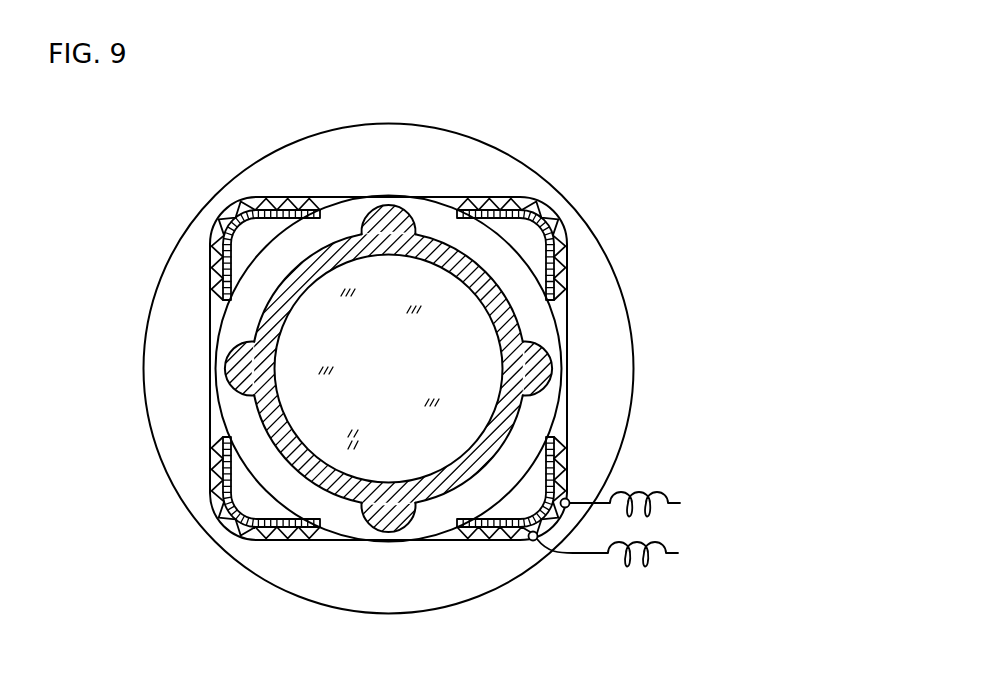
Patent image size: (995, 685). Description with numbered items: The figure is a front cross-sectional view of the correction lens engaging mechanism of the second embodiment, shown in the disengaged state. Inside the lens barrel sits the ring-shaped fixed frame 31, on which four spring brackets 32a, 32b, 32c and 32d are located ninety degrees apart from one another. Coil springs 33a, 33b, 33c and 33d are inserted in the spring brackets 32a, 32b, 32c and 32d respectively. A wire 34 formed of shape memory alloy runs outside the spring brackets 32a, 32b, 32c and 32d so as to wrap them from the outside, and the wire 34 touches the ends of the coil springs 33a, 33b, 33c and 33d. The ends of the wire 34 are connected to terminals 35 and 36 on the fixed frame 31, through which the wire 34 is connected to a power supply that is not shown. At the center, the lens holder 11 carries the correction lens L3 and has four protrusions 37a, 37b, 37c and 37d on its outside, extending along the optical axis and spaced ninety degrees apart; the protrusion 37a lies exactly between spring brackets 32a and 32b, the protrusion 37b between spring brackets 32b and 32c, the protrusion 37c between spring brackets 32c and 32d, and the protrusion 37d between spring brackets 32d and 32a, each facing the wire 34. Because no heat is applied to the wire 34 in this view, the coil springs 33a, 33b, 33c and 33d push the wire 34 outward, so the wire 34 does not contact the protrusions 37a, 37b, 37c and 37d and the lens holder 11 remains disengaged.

The lens holder 11 is at (514, 330).
The ring-shaped fixed frame 31 is at (383, 587).
The spring bracket 32a is at (222, 492).
The spring bracket 32b is at (223, 287).
The spring bracket 32c is at (562, 272).
The spring bracket 32d is at (560, 480).
The coil spring 33a is at (278, 532).
The coil spring 33b is at (262, 204).
The coil spring 33c is at (512, 197).
The coil spring 33d is at (493, 540).
The wire 34 is at (372, 196).
The terminal 35 is at (536, 538).
The terminal 36 is at (566, 501).
The protrusion 37a is at (223, 373).
The protrusion 37b is at (390, 215).
The protrusion 37c is at (543, 357).
The protrusion 37d is at (385, 527).
The correction lens L3 is at (297, 400).